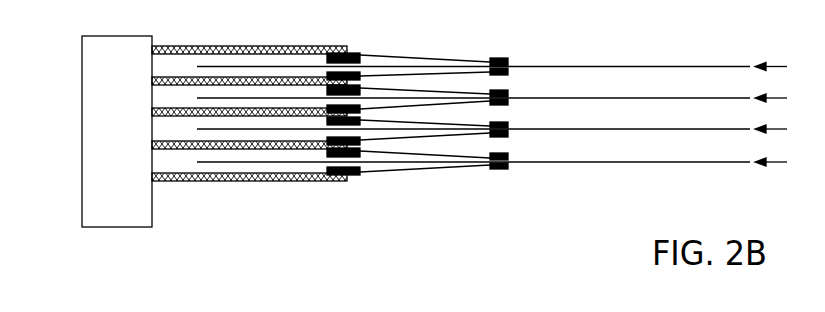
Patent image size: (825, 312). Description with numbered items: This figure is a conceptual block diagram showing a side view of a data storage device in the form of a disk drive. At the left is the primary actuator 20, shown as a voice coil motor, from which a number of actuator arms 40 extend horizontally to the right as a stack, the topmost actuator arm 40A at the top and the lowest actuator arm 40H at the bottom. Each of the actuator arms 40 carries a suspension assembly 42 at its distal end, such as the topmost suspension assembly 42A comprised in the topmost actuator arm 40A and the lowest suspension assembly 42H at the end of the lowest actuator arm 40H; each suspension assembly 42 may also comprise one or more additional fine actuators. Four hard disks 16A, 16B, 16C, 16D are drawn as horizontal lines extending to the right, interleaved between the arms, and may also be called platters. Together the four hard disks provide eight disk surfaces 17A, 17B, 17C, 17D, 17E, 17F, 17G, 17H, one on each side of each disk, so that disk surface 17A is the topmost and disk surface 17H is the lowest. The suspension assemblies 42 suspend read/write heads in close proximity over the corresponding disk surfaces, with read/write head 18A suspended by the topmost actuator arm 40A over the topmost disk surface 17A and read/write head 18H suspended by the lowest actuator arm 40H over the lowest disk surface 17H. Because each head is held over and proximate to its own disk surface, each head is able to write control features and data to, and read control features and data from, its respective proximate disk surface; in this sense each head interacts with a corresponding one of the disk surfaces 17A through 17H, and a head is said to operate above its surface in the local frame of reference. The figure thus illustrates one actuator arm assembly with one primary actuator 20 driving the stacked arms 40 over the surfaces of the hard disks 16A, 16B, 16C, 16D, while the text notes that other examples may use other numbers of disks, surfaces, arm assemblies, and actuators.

The primary actuator 20 is at (82, 73).
The actuator arms 40 is at (249, 132).
The topmost actuator arm 40A is at (270, 46).
The lowest actuator arm 40H is at (219, 182).
The suspension assembly 42 is at (422, 134).
The topmost suspension assembly 42A is at (447, 50).
The lowest suspension assembly 42H is at (447, 184).
The topmost disk surface 17A is at (663, 66).
The disk surface 17B is at (648, 68).
The disk surface 17C is at (663, 97).
The disk surface 17D is at (648, 99).
The disk surface 17E is at (651, 128).
The disk surface 17F is at (636, 130).
The disk surface 17G is at (651, 161).
The lowest disk surface 17H is at (636, 163).
The hard disk 16A is at (508, 67).
The hard disk 16B is at (508, 98).
The hard disk 16C is at (508, 129).
The hard disk 16D is at (508, 163).
The read/write head 18A is at (514, 58).
The read/write head 18H is at (515, 174).